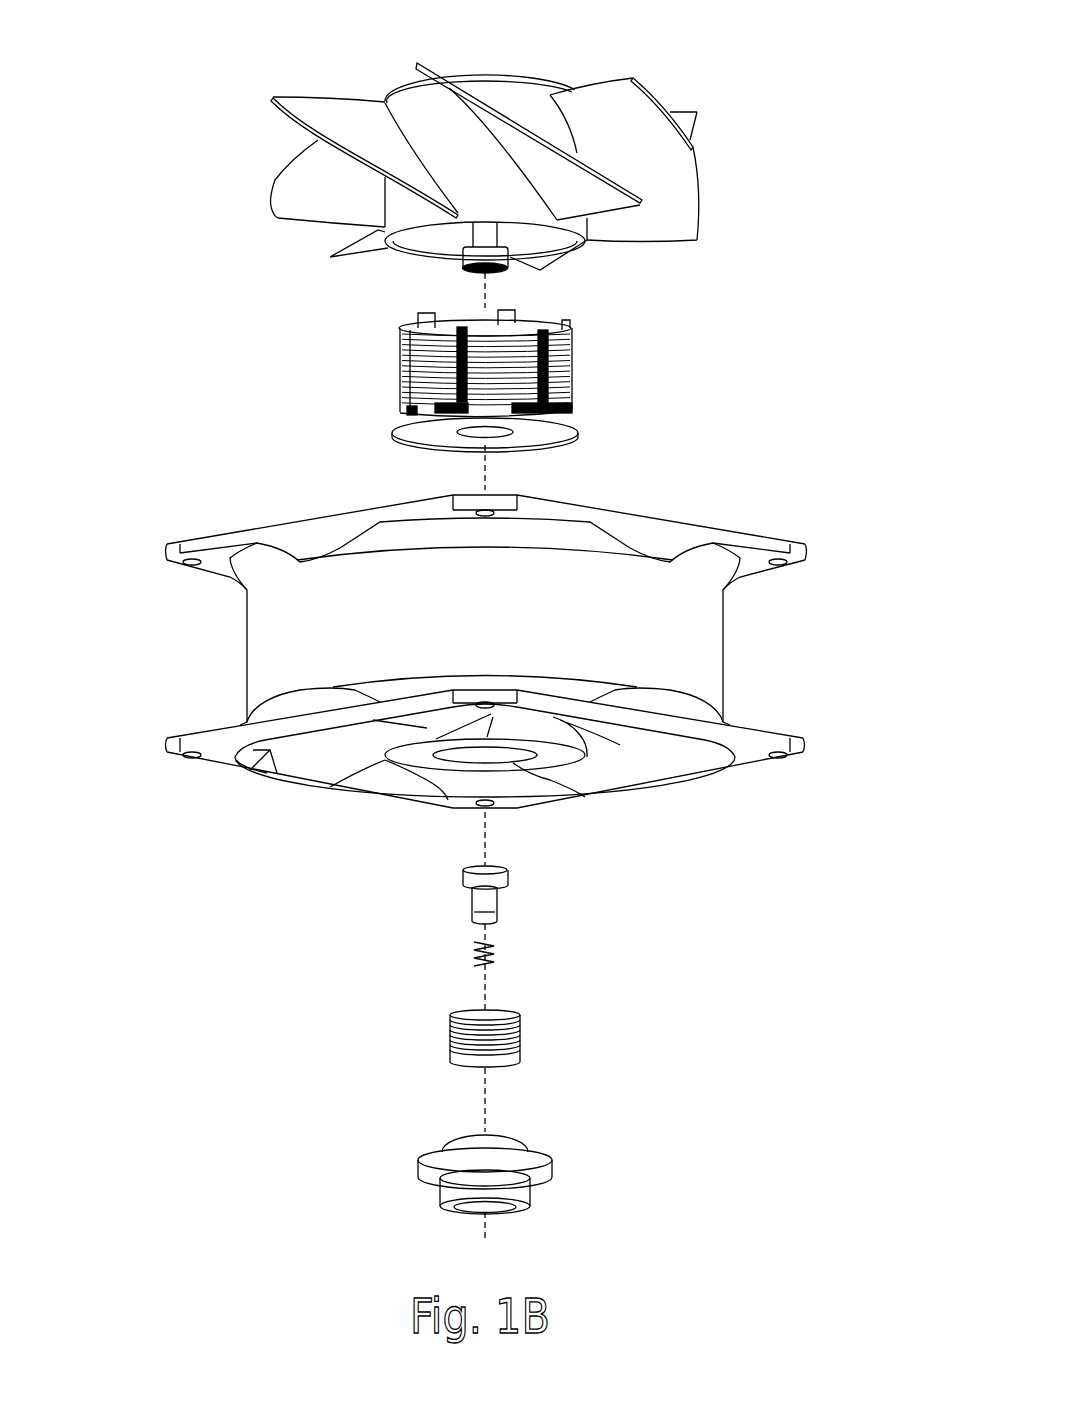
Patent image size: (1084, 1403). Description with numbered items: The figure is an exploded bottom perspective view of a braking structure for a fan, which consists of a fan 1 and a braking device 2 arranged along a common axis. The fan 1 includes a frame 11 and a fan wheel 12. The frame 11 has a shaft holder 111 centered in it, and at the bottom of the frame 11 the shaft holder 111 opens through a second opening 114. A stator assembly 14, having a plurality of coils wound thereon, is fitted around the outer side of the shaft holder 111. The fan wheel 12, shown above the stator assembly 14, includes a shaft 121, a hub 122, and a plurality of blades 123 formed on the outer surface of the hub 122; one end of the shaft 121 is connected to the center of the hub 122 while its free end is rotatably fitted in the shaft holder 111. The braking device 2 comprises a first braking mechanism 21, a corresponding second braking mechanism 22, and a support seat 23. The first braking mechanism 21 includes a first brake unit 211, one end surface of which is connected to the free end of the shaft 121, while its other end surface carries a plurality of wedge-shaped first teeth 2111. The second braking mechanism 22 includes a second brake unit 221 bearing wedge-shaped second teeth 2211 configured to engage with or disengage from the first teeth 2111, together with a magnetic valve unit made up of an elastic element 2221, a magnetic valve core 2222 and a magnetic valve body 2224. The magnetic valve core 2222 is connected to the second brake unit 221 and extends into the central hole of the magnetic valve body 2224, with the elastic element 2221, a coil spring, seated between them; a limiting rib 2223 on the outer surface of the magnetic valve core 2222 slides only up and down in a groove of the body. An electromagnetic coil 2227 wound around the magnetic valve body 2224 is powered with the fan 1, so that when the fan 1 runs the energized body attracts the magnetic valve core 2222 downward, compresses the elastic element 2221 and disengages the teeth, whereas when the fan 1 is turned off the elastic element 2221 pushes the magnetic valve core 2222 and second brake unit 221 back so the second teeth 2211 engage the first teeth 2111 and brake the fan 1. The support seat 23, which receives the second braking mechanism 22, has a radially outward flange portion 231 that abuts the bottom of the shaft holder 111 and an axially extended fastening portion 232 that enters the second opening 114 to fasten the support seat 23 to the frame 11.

The fan 1 is at (733, 422).
The frame 11 is at (222, 545).
The shaft holder 111 is at (405, 752).
The second opening 114 is at (510, 760).
The fan wheel 12 is at (712, 160).
The shaft 121 is at (490, 236).
The hub 122 is at (541, 84).
The blades 123 is at (648, 95).
The stator assembly 14 is at (582, 373).
The braking device 2 is at (185, 1143).
The first braking mechanism 21 is at (508, 258).
The first brake unit 211 is at (463, 256).
The first teeth 2111 is at (458, 276).
The second braking mechanism 22 is at (571, 997).
The second brake unit 221 is at (503, 876).
The second teeth 2211 is at (464, 868).
The elastic element 2221 is at (476, 947).
The magnetic valve core 2222 is at (496, 906).
The limiting rib 2223 is at (473, 908).
The magnetic valve body 2224 is at (455, 1013).
The electromagnetic coil 2227 is at (450, 1040).
The support seat 23 is at (569, 1138).
The flange portion 231 is at (430, 1161).
The fastening portion 232 is at (521, 1140).